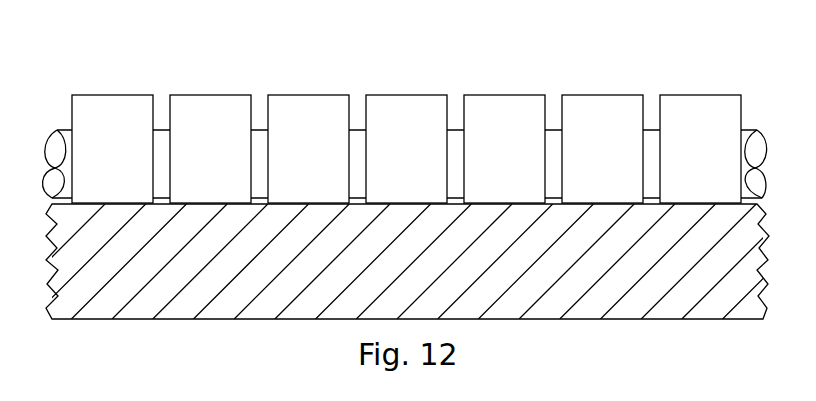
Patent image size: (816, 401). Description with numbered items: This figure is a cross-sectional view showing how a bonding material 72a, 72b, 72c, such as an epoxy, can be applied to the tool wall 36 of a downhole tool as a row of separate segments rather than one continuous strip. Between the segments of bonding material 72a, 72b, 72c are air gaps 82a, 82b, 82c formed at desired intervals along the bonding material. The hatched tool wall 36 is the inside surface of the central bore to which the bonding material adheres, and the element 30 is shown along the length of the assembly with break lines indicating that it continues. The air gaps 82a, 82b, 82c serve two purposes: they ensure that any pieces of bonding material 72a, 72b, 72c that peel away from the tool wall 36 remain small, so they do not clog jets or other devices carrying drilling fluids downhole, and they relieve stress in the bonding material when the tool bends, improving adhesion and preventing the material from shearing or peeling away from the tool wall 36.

The absorber strip assembly 30 is at (751, 140).
The tool wall 36 is at (227, 303).
The bonding material 72a is at (137, 105).
The bonding material 72b is at (235, 107).
The bonding material 72c is at (333, 107).
The air gap 82a is at (161, 122).
The air gap 82b is at (259, 122).
The air gap 82c is at (358, 124).